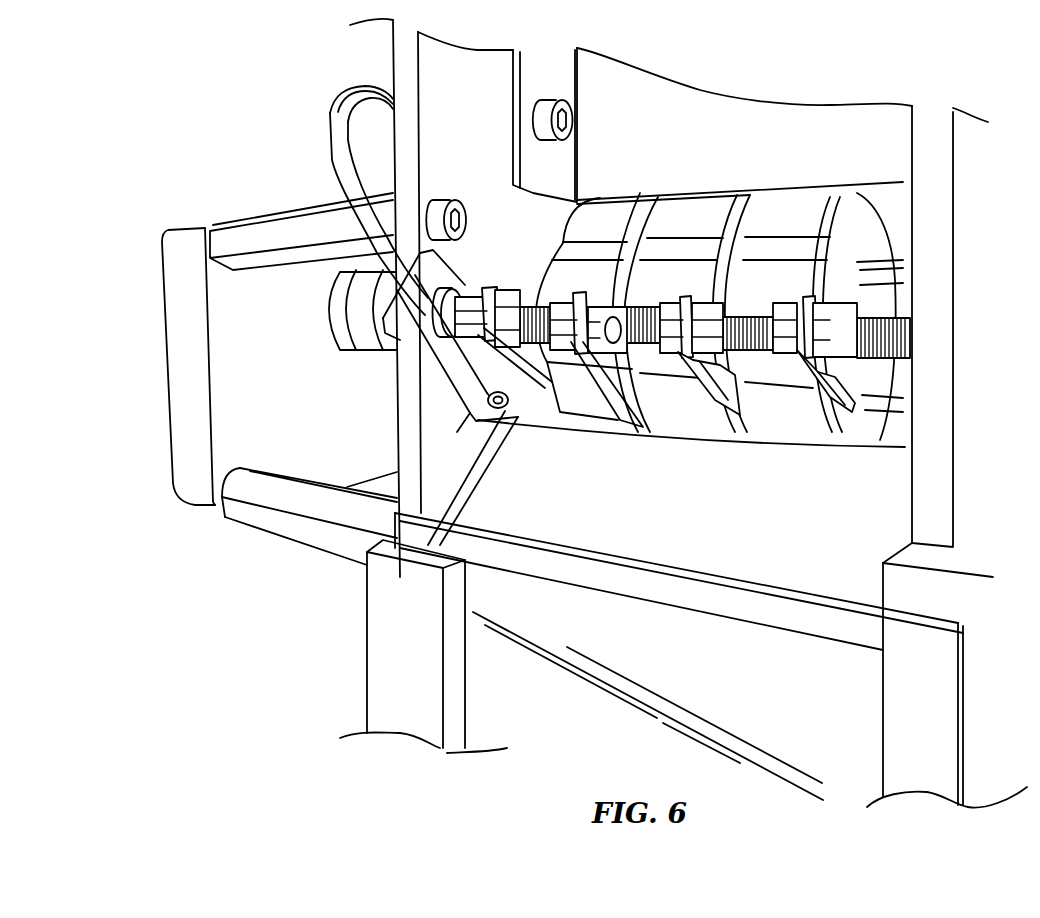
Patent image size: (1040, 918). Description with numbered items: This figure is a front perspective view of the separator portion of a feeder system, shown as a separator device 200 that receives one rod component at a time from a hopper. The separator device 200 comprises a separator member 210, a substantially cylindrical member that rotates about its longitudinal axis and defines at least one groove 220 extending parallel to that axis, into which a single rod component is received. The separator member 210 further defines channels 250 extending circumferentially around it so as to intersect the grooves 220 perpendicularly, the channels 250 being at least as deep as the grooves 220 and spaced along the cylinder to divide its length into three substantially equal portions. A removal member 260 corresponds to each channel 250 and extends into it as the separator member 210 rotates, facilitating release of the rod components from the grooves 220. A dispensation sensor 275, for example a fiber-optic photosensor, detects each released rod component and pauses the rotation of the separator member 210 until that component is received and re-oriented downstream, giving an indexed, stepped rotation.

The separator device 200 is at (274, 187).
The channel 250 is at (657, 197).
The separator member 210 is at (710, 217).
The groove 220 is at (798, 247).
The removal member 260 is at (720, 390).
The dispensation sensor 275 is at (512, 417).